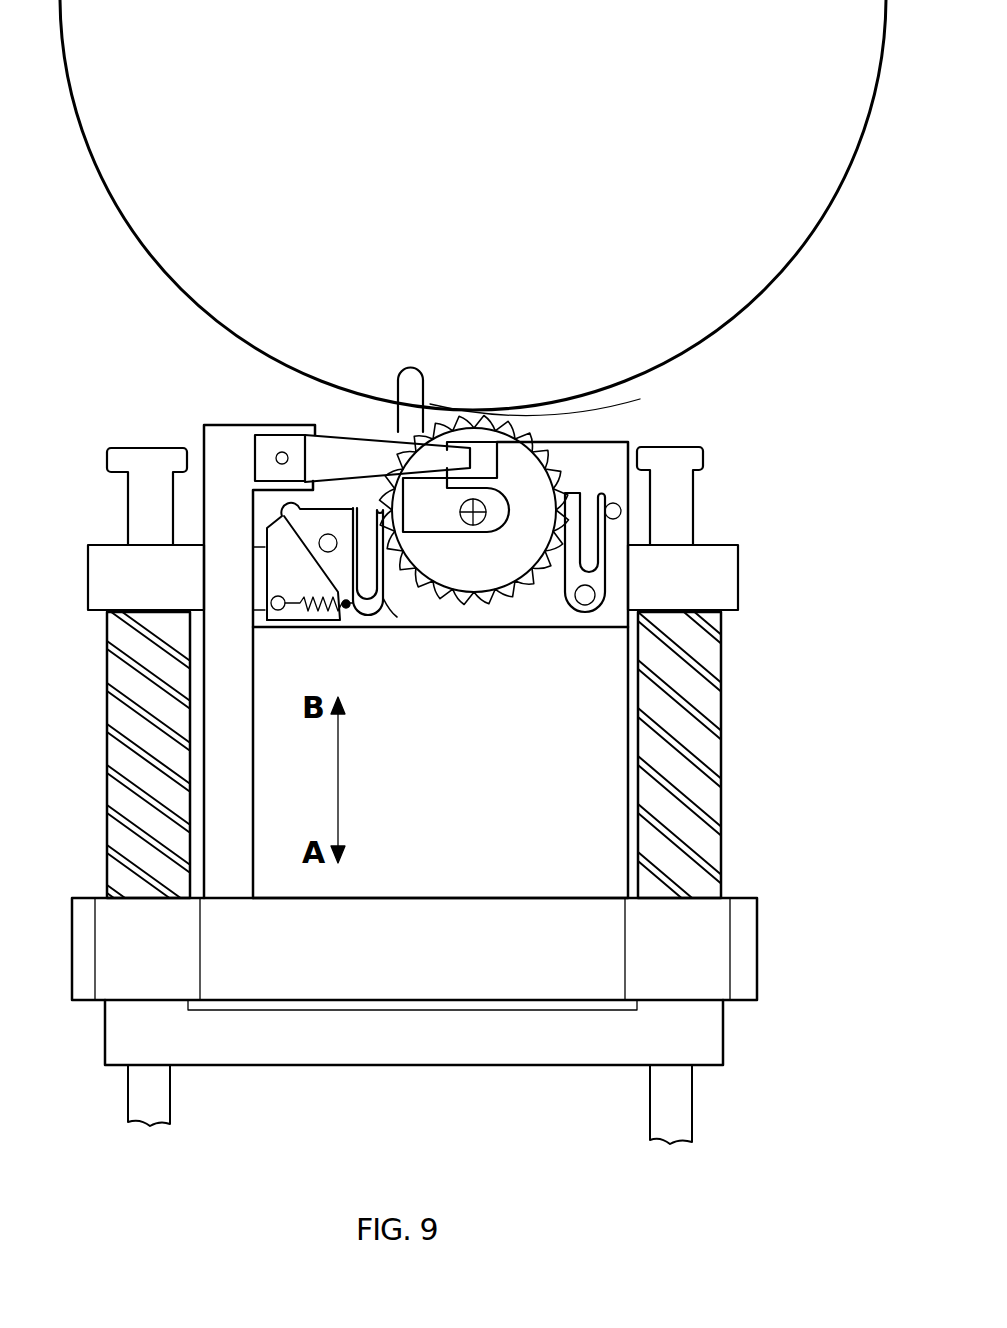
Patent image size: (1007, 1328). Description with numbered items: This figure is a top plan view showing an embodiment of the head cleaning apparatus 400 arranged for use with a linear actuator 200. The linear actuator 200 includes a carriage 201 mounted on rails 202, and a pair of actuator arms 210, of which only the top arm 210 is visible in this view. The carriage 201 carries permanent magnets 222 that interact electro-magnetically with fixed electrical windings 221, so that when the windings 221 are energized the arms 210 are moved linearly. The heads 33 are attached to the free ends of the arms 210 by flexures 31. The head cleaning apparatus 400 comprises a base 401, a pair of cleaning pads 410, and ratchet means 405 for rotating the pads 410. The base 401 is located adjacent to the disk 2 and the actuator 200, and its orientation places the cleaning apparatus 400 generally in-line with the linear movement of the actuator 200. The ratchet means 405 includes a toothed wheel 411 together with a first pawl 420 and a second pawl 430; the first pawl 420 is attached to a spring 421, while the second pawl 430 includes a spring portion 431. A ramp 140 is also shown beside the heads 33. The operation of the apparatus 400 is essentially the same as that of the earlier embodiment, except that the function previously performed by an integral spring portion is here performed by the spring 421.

The disk 2 is at (207, 312).
The ramp 140 is at (425, 381).
The flexure 31 is at (367, 432).
The head 33 is at (528, 498).
The toothed wheel 411 is at (483, 466).
The spring portion 431 is at (605, 535).
The rails 202 is at (128, 514).
The second pawl 430 is at (605, 580).
The head cleaning apparatus 400 is at (636, 581).
The spring 421 is at (300, 595).
The actuator arm 210 is at (255, 670).
The ratchet means 405 is at (385, 616).
The first pawl 420 is at (360, 633).
The cleaning pads 410 is at (473, 578).
The base 401 is at (508, 630).
The electrical windings 221 is at (115, 743).
The linear actuator 200 is at (752, 756).
The permanent magnets 222 is at (713, 945).
The carriage 201 is at (757, 945).